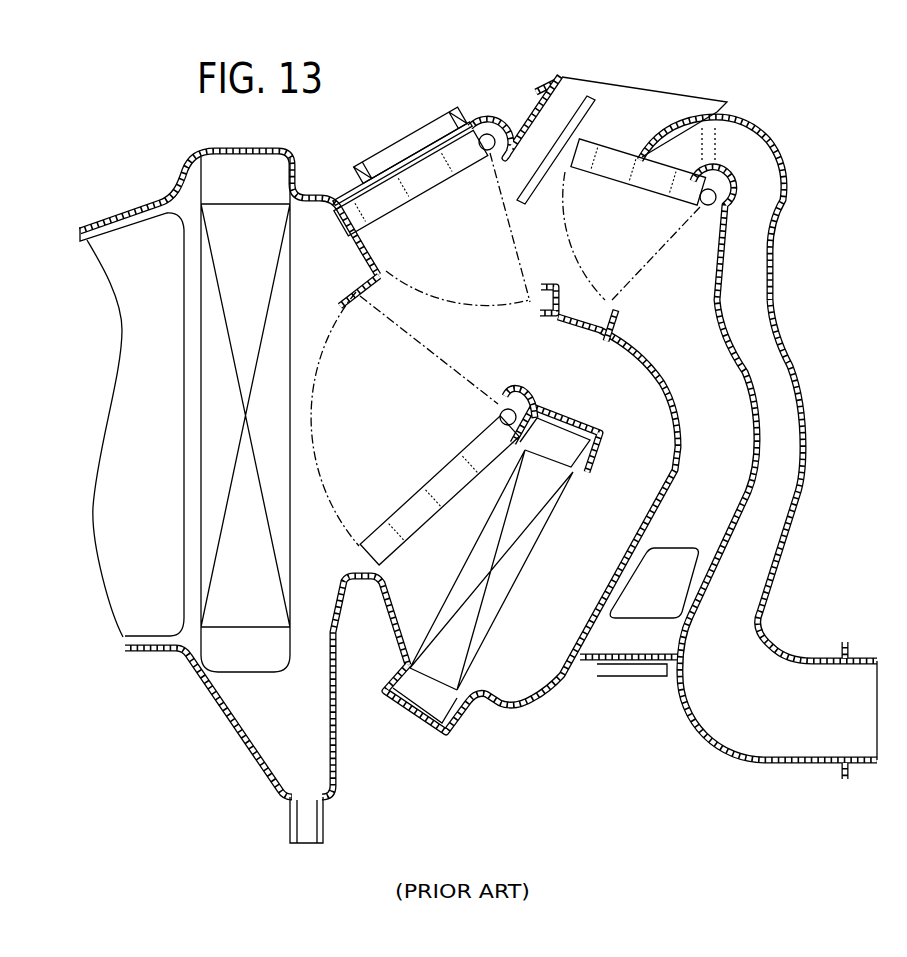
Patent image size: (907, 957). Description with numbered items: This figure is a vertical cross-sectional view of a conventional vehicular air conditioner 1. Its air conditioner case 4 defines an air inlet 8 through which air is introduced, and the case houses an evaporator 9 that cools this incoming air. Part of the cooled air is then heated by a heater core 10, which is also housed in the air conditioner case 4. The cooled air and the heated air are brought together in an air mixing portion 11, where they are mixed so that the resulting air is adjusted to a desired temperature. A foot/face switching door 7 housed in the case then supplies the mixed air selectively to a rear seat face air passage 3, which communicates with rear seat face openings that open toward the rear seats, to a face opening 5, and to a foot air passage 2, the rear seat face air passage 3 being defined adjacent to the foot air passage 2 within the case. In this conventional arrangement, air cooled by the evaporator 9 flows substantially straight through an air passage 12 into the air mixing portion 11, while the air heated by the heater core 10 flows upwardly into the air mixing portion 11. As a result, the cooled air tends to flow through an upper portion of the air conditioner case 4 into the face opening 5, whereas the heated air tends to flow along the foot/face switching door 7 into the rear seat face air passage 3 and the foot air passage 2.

The vehicular air conditioner 1 is at (780, 79).
The foot air passage 2 is at (700, 363).
The rear seat face air passage 3 is at (773, 379).
The air conditioner case 4 is at (514, 715).
The face opening 5 is at (639, 102).
The foot/face switching door 7 is at (608, 168).
The air inlet 8 is at (132, 570).
The evaporator 9 is at (223, 415).
The heater core 10 is at (507, 570).
The air mixing portion 11 is at (482, 242).
The air passage 12 is at (365, 378).